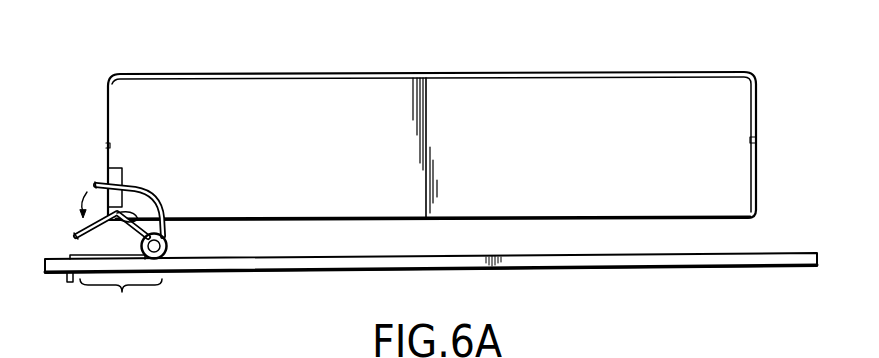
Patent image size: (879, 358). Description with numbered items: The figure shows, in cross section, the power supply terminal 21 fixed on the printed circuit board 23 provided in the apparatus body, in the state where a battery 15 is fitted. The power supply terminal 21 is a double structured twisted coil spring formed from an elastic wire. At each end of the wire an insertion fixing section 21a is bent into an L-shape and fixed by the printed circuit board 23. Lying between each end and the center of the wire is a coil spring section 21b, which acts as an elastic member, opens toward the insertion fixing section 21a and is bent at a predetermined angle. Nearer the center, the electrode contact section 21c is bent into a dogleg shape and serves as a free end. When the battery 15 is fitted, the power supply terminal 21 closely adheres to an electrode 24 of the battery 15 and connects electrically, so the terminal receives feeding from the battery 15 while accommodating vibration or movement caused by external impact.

The battery 15 is at (283, 73).
The power supply terminal 21 is at (97, 186).
The insertion fixing section 21a is at (121, 304).
The coil spring section 21b is at (173, 246).
The electrode contact section 21c is at (138, 172).
The printed circuit board 23 is at (238, 273).
The electrode 24 is at (108, 172).